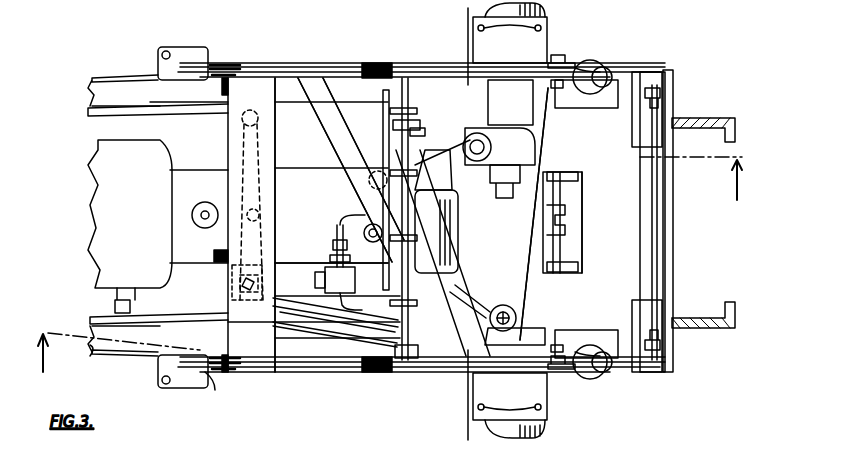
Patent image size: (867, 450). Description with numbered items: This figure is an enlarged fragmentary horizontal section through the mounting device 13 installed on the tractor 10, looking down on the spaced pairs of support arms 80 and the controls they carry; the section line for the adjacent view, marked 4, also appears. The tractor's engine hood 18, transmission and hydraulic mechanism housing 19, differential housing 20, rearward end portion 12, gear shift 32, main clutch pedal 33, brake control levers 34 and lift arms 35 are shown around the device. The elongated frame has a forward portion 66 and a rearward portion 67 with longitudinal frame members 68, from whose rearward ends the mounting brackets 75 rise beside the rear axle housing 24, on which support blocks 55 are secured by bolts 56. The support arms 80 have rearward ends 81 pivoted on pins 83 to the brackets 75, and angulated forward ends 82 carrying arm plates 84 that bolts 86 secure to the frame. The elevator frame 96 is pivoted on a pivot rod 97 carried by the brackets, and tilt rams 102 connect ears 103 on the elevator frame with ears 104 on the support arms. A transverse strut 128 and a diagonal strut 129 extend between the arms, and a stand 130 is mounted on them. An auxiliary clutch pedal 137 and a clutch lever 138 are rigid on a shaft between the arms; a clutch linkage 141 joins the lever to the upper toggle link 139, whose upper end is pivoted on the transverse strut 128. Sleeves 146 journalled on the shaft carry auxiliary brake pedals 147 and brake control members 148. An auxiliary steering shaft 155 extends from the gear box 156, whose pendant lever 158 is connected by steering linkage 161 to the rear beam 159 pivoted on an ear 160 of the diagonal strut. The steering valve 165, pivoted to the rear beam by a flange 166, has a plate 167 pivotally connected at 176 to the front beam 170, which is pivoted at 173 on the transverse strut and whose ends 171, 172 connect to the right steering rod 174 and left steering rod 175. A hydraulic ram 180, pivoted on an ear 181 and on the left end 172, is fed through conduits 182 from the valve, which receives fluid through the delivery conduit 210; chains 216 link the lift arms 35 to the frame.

The tractor 10 is at (80, 189).
The rearward end portion 12 is at (580, 265).
The mounting device 13 is at (588, 160).
The engine hood 18 is at (130, 226).
The transmission and hydraulic mechanism housing 19 is at (320, 175).
The differential housing 20 is at (582, 242).
The rear axle housing 24 is at (466, 12).
The gear shift 32 is at (200, 215).
The main clutch pedal 33 is at (213, 376).
The brake control levers 34 is at (442, 120).
The lift arms 35 is at (515, 312).
The support blocks 55 is at (552, 55).
The bolts 56 is at (540, 8).
The forward portion 66 is at (82, 362).
The rearward portion 67 is at (600, 108).
The longitudinal frame members 68 is at (112, 95).
The mounting brackets 75 is at (648, 72).
The support arms 80 is at (308, 62).
The rearward ends 81 is at (585, 60).
The forward ends 82 is at (222, 70).
The pins 83 is at (560, 55).
The arm plates 84 is at (188, 50).
The bolts 86 is at (166, 50).
The elevator frame 96 is at (730, 117).
The pivot rod 97 is at (660, 196).
The tilt rams 102 is at (592, 62).
The ears 103 is at (674, 72).
The ears 104 is at (508, 78).
The transverse strut 128 is at (286, 78).
The diagonal strut 129 is at (330, 78).
The stand 130 is at (378, 62).
The auxiliary clutch pedal 137 is at (383, 102).
The clutch lever 138 is at (405, 360).
The upper toggle link 139 is at (240, 372).
The clutch linkage 141 is at (318, 350).
The sleeves 146 is at (418, 160).
The auxiliary brake pedals 147 is at (368, 225).
The brake control members 148 is at (422, 128).
The auxiliary steering shaft 155 is at (488, 110).
The gear box 156 is at (548, 150).
The pendant lever 158 is at (570, 195).
The rear beam 159 is at (337, 240).
The ear 160 is at (345, 222).
The steering linkage 161 is at (498, 185).
The steering valve 165 is at (330, 268).
The flange 166 is at (356, 300).
The plate 167 is at (331, 275).
The front beam 170 is at (242, 148).
The end 171 is at (242, 128).
The left end 172 is at (235, 296).
The pivot 173 is at (248, 210).
The right steering rod 174 is at (98, 116).
The left steering rod 175 is at (95, 318).
The pivotal connection 176 is at (214, 258).
The hydraulic ram 180 is at (290, 345).
The ear 181 is at (460, 360).
The conduits 182 is at (330, 345).
The delivery conduit 210 is at (370, 183).
The chains 216 is at (545, 335).
The section line 4 is at (388, 264).